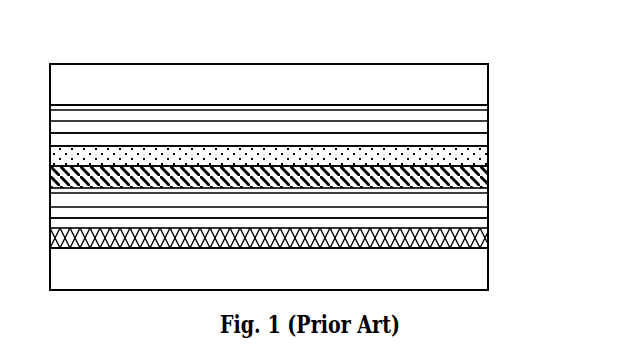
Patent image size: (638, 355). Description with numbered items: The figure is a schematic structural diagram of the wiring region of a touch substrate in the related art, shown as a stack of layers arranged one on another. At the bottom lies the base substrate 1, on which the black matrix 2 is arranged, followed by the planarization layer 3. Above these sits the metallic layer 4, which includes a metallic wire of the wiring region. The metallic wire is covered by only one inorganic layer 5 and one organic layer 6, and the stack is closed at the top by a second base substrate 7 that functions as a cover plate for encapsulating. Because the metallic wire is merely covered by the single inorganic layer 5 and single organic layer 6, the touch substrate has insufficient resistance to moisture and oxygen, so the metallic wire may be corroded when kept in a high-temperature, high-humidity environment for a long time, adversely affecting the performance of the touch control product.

The base substrate 1 is at (488, 268).
The black matrix 2 is at (488, 238).
The planarization layer 3 is at (488, 208).
The metallic layer 4 is at (488, 177).
The inorganic layer 5 is at (488, 155).
The organic layer 6 is at (488, 127).
The base substrate 7 is at (488, 85).